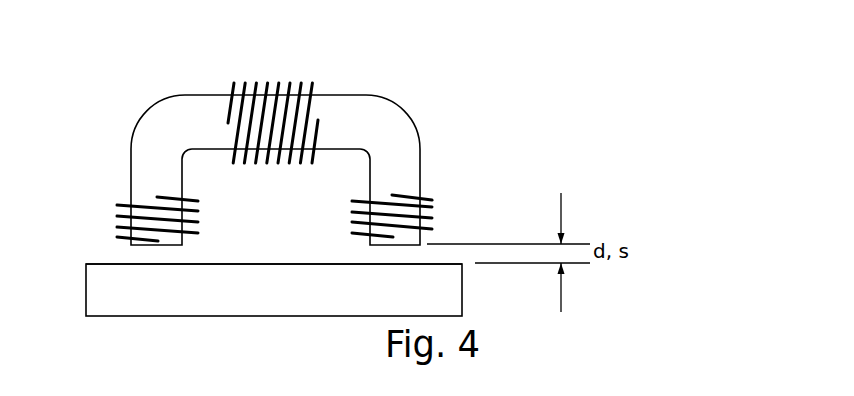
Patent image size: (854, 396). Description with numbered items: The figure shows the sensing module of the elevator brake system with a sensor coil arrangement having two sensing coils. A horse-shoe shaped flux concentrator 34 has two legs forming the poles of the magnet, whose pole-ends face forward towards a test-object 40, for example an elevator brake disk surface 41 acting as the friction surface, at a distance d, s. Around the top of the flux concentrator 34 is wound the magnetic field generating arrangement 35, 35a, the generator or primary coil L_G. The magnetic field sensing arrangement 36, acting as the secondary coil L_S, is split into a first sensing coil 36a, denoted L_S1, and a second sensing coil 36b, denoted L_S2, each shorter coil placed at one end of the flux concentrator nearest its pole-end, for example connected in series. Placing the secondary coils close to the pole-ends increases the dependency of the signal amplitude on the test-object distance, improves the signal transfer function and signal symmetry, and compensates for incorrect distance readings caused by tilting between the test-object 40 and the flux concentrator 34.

The flux concentrator 34 is at (410, 126).
The magnetic field generating arrangement 35 is at (310, 89).
The write coil winding 35a is at (310, 82).
The magnetic field sensing arrangement 36 is at (292, 193).
The first sensing coil 36a is at (425, 196).
The second sensing coil 36b is at (128, 205).
The test-object 40 is at (130, 308).
The elevator brake disk surface 41 is at (116, 264).